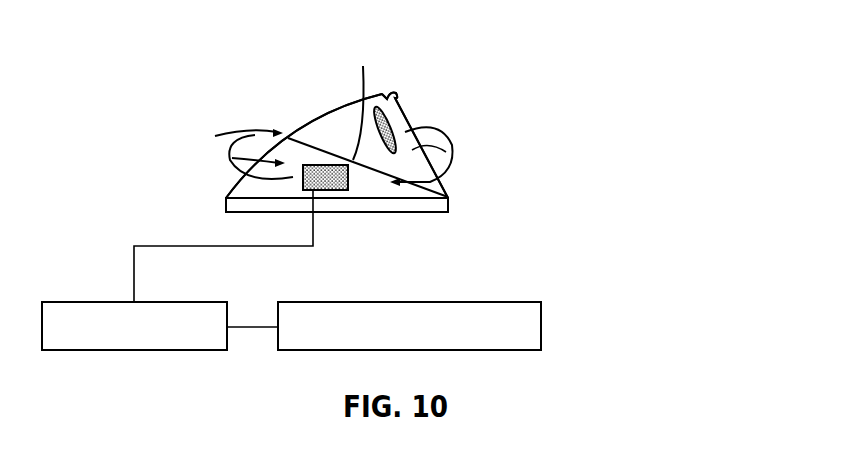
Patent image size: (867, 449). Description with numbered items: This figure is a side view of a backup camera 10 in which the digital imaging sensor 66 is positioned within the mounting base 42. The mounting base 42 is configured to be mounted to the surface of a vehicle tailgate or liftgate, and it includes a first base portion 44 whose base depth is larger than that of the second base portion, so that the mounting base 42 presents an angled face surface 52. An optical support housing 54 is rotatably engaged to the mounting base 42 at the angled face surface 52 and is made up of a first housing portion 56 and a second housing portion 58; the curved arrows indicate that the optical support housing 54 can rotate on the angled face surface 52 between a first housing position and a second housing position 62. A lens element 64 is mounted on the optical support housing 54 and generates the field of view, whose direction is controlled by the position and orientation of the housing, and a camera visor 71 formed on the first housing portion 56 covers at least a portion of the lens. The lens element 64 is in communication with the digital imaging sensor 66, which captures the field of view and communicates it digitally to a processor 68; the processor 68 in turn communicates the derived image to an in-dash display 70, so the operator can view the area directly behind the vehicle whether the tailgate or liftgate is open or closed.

The backup camera 10 is at (506, 169).
The mounting base 42 is at (372, 190).
The first base portion 44 is at (237, 152).
The angled face surface 52 is at (363, 98).
The optical support housing 54 is at (344, 95).
The first housing portion 56 is at (315, 110).
The second housing portion 58 is at (452, 140).
The second housing position 62 is at (408, 116).
The lens element 64 is at (406, 128).
The digital imaging sensor 66 is at (335, 190).
The processor 68 is at (100, 302).
The in-dash display 70 is at (338, 302).
The camera visor 71 is at (389, 92).